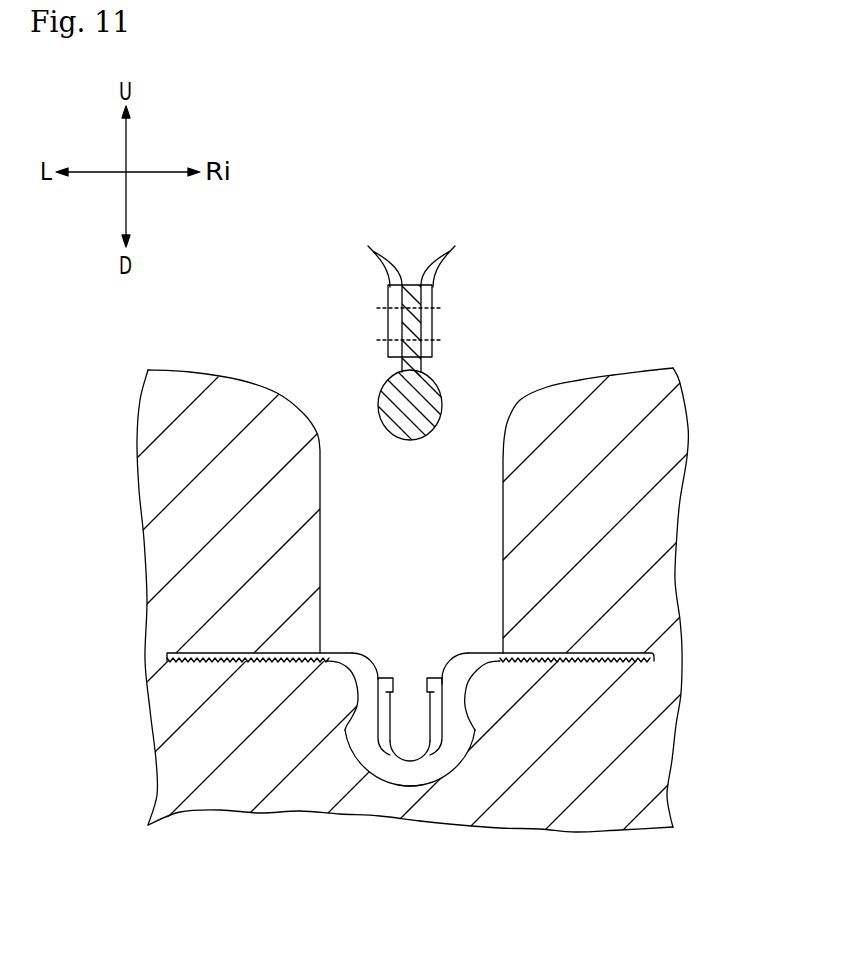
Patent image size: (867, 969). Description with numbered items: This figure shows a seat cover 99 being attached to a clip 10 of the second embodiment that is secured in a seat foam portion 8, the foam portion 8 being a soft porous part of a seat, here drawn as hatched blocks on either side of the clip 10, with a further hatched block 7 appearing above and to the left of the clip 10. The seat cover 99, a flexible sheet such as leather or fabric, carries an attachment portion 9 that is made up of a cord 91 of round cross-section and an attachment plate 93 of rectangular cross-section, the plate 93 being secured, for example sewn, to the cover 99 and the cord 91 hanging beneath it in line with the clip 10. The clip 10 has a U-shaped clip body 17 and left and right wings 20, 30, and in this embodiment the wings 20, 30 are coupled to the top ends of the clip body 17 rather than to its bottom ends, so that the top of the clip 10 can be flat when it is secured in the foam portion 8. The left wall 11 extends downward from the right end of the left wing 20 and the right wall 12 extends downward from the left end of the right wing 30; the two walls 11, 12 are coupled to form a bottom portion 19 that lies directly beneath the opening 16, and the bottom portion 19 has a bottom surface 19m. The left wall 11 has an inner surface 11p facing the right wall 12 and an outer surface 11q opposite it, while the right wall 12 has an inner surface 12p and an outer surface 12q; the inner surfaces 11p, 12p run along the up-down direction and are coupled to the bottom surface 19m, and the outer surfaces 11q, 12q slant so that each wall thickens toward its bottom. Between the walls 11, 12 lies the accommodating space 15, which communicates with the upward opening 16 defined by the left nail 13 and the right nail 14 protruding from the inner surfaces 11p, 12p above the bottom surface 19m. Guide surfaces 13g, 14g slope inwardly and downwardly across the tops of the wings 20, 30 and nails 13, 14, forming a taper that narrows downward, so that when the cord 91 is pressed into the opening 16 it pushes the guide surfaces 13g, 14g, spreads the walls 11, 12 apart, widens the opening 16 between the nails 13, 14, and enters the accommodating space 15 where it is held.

The first upper block 7 is at (351, 435).
The seat foam portion 8 is at (589, 536).
The attachment portion 9 is at (300, 359).
The clip 10 is at (405, 646).
The left wall 11 is at (433, 469).
The inner surface of the left wall 11p is at (380, 778).
The outer surface of the left wall 11q is at (350, 707).
The right wall 12 is at (433, 469).
The inner surface of the right wall 12p is at (447, 778).
The outer surface of the right wall 12q is at (467, 707).
The left nail 13 is at (390, 677).
The guide surface 13g is at (380, 678).
The right nail 14 is at (437, 681).
The guide surface 14g is at (445, 676).
The accommodating space 15 is at (414, 737).
The opening 16 is at (420, 683).
The clip body 17 is at (484, 643).
The bottom portion 19 is at (410, 768).
The bottom surface 19m is at (404, 790).
The left wing 20 is at (207, 653).
The right wing 30 is at (597, 653).
The cord 91 is at (431, 393).
The attachment plate 93 is at (413, 321).
The seat cover 99 is at (455, 242).